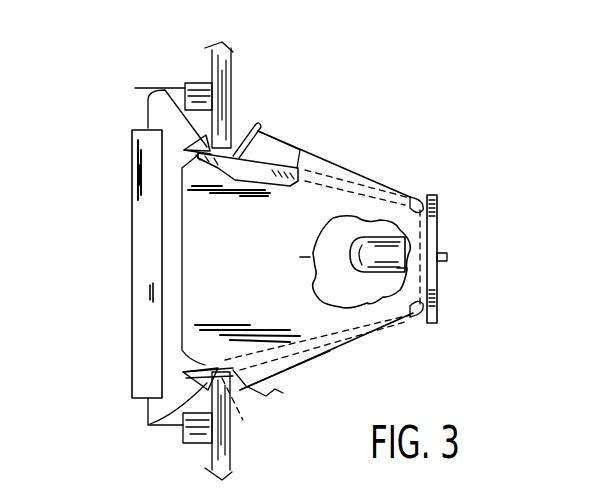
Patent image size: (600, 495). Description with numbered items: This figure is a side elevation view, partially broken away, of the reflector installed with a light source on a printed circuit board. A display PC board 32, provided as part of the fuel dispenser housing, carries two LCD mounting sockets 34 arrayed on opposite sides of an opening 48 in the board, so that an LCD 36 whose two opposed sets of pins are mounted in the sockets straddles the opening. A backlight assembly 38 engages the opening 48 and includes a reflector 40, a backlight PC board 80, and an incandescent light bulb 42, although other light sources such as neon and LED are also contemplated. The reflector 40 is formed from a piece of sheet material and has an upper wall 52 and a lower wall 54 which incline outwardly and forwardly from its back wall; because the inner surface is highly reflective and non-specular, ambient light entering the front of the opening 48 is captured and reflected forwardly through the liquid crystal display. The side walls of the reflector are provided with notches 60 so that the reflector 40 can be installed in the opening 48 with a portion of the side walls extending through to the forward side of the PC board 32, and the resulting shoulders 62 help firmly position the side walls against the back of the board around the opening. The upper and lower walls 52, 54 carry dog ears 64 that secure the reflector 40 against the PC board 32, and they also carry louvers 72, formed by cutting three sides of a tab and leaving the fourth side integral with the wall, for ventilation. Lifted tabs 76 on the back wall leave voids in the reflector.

The display PC board 32 is at (233, 75).
The LCD mounting sockets 34 is at (198, 83).
The LCD 36 is at (132, 198).
The backlight assembly 38 is at (318, 358).
The reflector 40 is at (307, 203).
The incandescent light bulb 42 is at (409, 250).
The opening 48 is at (236, 125).
The upper wall 52 is at (300, 134).
The lower wall 54 is at (350, 350).
The notches 60 is at (203, 362).
The shoulders 62 is at (247, 410).
The dog ears 64 is at (140, 88).
The louvers 72 is at (288, 158).
The lifted tabs 76 is at (446, 262).
The backlight PC board 80 is at (437, 198).